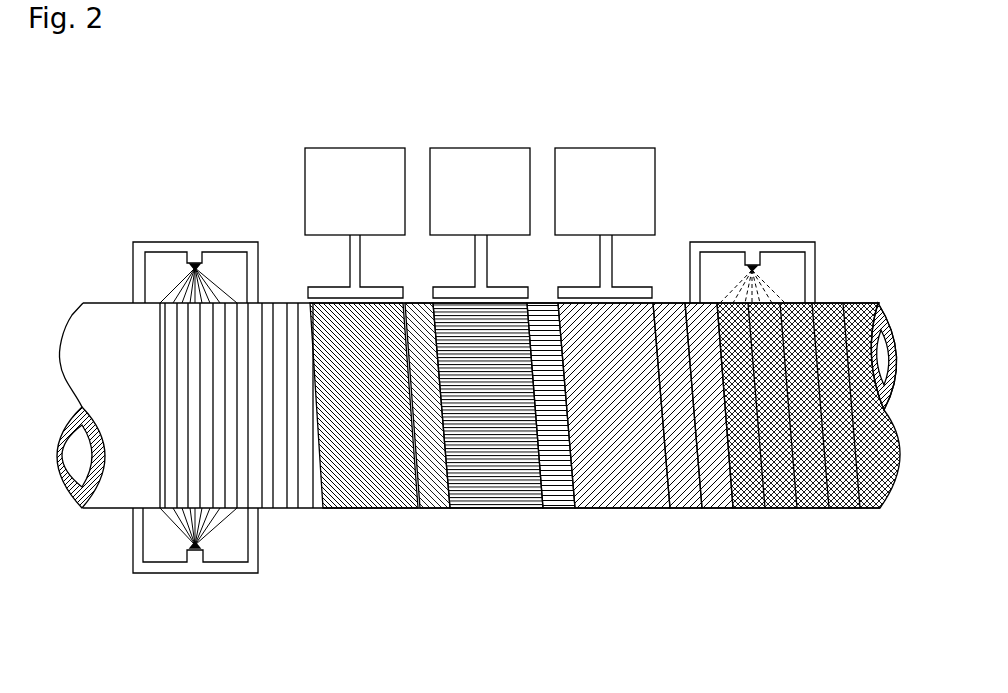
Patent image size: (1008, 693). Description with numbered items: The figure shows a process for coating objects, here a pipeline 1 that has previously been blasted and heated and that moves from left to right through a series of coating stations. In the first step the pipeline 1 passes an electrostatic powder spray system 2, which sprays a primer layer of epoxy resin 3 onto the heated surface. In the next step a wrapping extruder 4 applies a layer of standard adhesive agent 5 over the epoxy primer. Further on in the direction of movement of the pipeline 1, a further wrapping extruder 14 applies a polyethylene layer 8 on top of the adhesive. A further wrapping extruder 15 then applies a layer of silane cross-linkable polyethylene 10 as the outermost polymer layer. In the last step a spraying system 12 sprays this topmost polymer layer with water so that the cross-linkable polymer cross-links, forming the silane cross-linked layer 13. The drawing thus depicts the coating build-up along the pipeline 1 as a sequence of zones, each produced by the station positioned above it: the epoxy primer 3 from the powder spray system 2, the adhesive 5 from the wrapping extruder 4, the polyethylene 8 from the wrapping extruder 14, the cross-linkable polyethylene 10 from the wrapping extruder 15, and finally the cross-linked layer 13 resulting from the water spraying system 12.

The pipeline 1 is at (72, 318).
The electrostatic powder spray system 2 is at (157, 242).
The primer layer of epoxy resin 3 is at (280, 493).
The wrapping extruder 4 is at (338, 148).
The layer of standard adhesive agent 5 is at (353, 493).
The polyethylene layer 8 is at (495, 493).
The layer of silane cross-linkable polyethylene 10 is at (685, 488).
The spraying system 12 is at (753, 240).
The silane cross-linked layer 13 is at (747, 490).
The wrapping extruder 14 is at (458, 148).
The wrapping extruder 15 is at (583, 148).